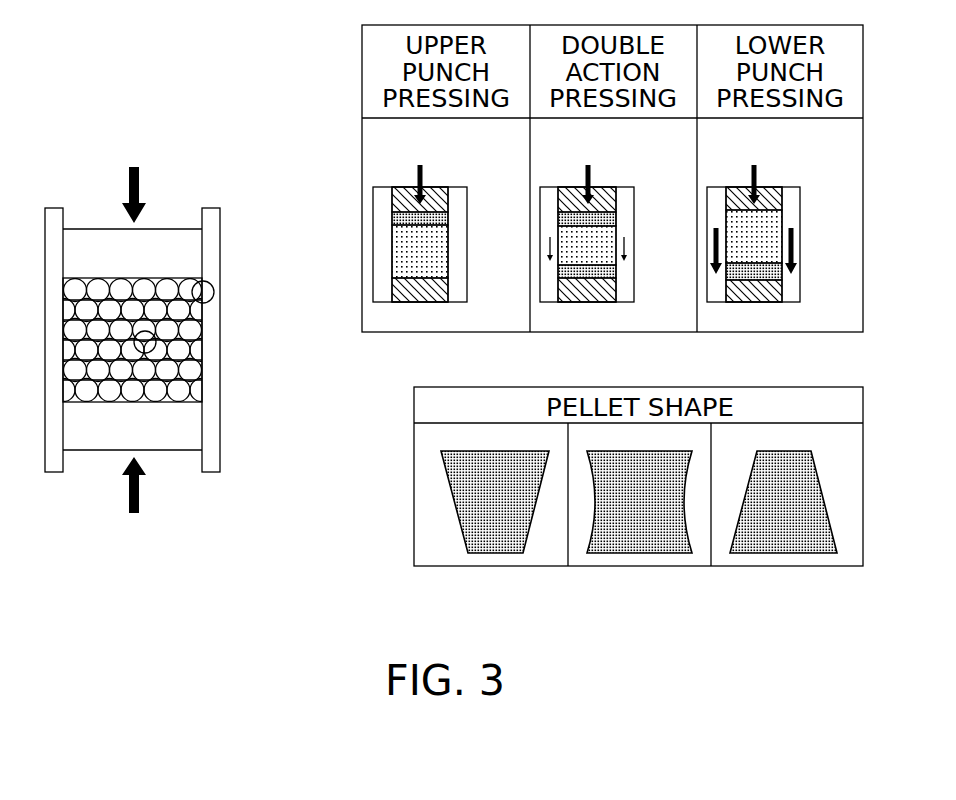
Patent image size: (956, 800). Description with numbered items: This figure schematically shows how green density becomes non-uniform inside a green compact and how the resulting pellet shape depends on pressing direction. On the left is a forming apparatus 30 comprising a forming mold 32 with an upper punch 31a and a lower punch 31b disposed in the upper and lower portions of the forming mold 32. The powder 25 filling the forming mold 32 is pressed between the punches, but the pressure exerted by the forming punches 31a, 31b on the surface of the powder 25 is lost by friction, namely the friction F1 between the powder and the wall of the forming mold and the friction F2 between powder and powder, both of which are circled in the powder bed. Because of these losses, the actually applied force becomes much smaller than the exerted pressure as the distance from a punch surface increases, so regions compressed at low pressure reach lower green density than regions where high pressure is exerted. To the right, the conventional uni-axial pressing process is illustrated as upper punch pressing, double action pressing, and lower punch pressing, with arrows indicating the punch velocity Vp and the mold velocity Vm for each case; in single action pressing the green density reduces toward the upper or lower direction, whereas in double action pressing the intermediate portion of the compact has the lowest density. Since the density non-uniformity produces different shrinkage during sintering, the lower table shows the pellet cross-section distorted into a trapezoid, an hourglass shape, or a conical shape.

The forming apparatus 30 is at (165, 316).
The upper punch 31a is at (89, 224).
The lower punch 31b is at (83, 443).
The forming mold 32 is at (222, 429).
The powder 25 is at (198, 370).
The friction between powder and forming mold F1 is at (214, 292).
The friction between powder and powder F2 is at (156, 341).
The punch velocity Vp is at (422, 170).
The die (mold) velocity Vm is at (628, 247).